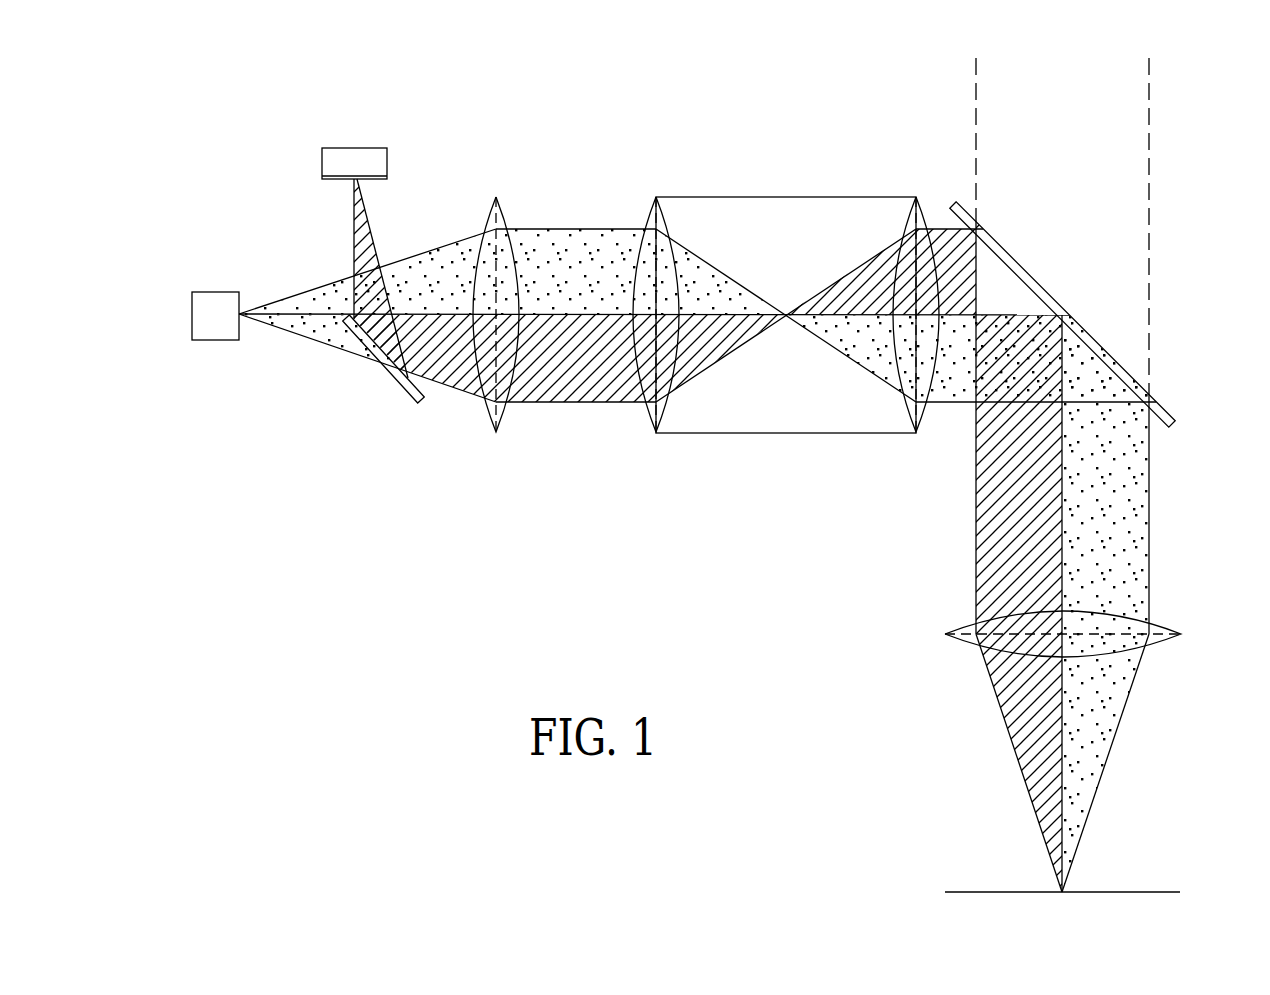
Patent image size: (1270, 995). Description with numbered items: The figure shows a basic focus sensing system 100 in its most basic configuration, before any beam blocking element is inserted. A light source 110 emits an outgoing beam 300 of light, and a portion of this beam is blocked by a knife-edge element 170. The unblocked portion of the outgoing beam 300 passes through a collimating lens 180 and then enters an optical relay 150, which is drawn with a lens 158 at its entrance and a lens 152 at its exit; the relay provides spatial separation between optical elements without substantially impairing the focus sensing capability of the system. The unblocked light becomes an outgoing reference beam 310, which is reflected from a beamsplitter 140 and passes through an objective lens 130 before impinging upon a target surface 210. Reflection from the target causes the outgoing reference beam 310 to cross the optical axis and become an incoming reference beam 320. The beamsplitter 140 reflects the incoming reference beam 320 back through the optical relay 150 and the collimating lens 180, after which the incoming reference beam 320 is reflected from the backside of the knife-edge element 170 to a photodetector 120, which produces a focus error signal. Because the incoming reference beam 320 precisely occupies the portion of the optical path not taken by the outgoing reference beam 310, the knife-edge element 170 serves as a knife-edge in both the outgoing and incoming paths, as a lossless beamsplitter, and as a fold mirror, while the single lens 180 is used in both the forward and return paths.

The optical inspection system 100 is at (793, 570).
The light source 110 is at (218, 343).
The photodetector 120 is at (388, 165).
The objective lens 130 is at (1164, 625).
The beamsplitter 140 is at (1167, 410).
The optical relay 150 is at (785, 450).
The lens 152 is at (922, 416).
The lens 158 is at (648, 413).
The knife-edge element 170 is at (397, 388).
The collimating lens 180 is at (487, 415).
The target surface 210 is at (1118, 892).
The outgoing beam 300 is at (307, 291).
The outgoing reference beam 310 is at (1125, 541).
The incoming reference beam 320 is at (363, 227).